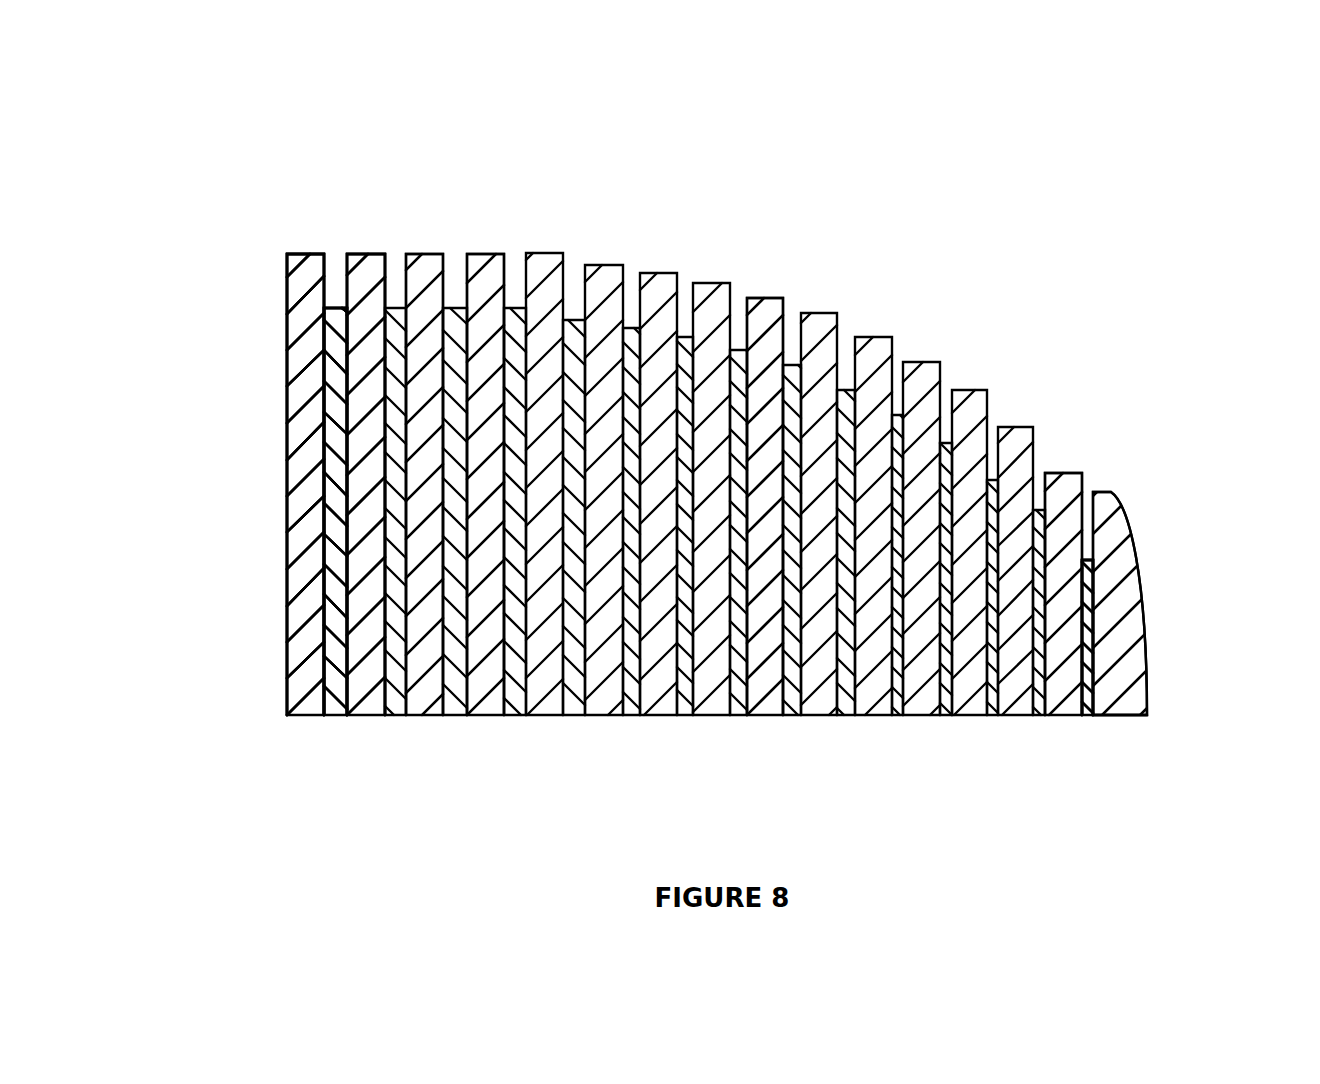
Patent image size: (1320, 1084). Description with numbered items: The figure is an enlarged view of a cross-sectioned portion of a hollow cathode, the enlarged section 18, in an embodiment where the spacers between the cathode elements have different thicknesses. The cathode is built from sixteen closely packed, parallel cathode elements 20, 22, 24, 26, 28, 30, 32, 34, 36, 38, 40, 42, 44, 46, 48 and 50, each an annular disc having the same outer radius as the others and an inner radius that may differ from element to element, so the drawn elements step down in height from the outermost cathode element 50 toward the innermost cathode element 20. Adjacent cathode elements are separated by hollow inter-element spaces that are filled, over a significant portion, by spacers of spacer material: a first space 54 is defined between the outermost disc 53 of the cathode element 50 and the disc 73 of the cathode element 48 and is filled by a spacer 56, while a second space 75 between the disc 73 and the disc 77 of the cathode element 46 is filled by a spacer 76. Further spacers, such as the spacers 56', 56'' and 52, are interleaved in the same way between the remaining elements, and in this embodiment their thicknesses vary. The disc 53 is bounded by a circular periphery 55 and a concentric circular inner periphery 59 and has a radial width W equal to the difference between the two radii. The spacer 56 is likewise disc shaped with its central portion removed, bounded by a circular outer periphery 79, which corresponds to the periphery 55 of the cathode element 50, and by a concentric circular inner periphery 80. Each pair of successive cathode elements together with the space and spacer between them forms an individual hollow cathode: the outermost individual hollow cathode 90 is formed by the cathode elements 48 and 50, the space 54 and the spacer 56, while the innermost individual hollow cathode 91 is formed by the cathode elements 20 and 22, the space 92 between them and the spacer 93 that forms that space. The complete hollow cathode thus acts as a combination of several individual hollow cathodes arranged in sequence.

The enlarged section 18 is at (487, 254).
The cathode element 20 is at (1128, 575).
The cathode element 22 is at (1075, 480).
The cathode element 24 is at (1010, 465).
The cathode element 26 is at (981, 397).
The cathode element 28 is at (933, 366).
The cathode element 30 is at (870, 337).
The cathode element 32 is at (815, 317).
The cathode element 34 is at (775, 706).
The cathode element 36 is at (717, 707).
The cathode element 38 is at (653, 278).
The cathode element 40 is at (593, 263).
The cathode element 42 is at (541, 253).
The cathode element 44 is at (490, 715).
The cathode element 46 is at (427, 715).
The cathode element 48 is at (363, 258).
The outermost cathode element 50 is at (297, 291).
The spacer strip 52 is at (900, 362).
The outermost disc 53 is at (287, 482).
The space 54 is at (335, 258).
The circular periphery 55 is at (305, 255).
The spacer 56 is at (1161, 625).
The spacer strip 56' is at (770, 465).
The spacer strip 56'' is at (293, 522).
The inner periphery 59 is at (307, 717).
The disc 73 is at (365, 545).
The second space 75 is at (395, 262).
The spacer 76 is at (388, 583).
The disc 77 is at (427, 352).
The outer periphery 79 is at (327, 318).
The inner periphery 80 is at (340, 715).
The outermost individual hollow cathode 90 is at (353, 715).
The innermost individual hollow cathode 91 is at (1147, 720).
The space 92 is at (1088, 493).
The spacer 93 is at (1092, 707).
The radial width W is at (287, 431).